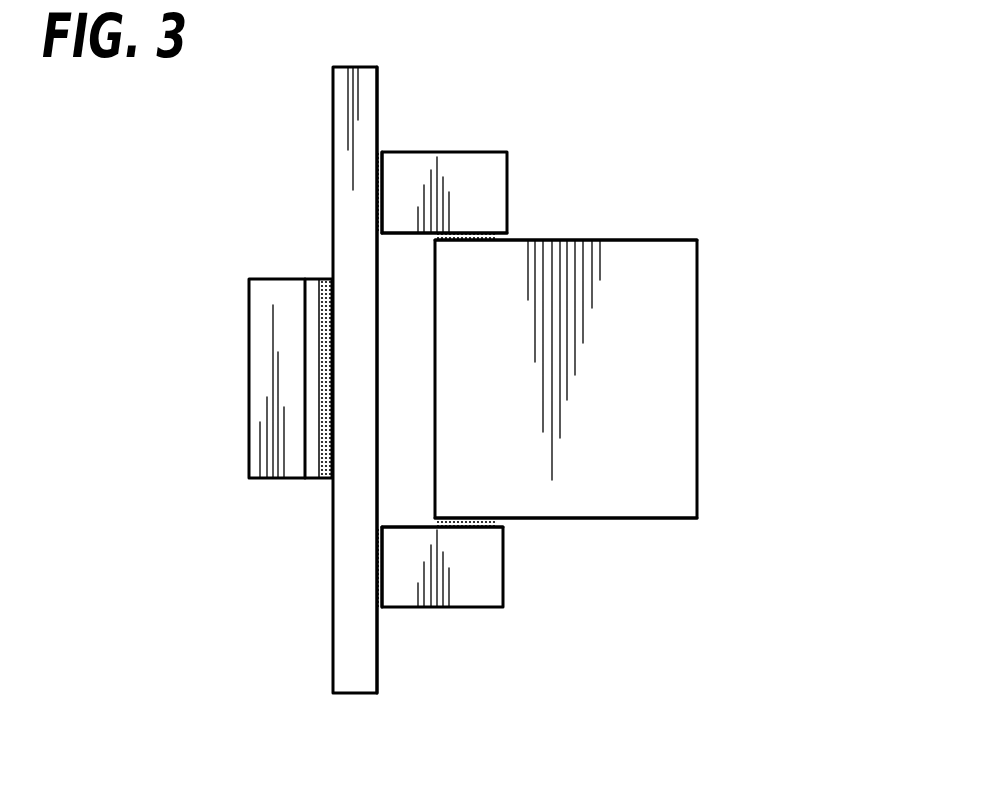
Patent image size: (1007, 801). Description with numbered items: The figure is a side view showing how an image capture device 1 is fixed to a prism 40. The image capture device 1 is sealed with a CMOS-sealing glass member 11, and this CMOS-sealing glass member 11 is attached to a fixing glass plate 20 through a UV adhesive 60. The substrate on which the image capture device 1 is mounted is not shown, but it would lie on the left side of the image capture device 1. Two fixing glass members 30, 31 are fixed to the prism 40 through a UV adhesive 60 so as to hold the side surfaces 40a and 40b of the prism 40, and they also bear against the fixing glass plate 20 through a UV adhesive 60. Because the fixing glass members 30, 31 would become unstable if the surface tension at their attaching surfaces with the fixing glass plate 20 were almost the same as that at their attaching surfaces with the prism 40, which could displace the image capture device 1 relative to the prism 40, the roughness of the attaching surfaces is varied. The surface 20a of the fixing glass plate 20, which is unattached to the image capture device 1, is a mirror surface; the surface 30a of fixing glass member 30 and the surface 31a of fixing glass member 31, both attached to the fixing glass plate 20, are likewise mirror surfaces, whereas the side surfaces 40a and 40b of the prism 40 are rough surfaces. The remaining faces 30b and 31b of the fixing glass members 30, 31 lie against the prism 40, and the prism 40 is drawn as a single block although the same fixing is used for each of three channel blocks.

The image capture device 1 is at (265, 387).
The CMOS-sealing glass member 11 is at (313, 290).
The fixing glass plate 20 is at (345, 603).
The surface of fixing glass plate 20a is at (378, 387).
The fixing glass member 30 is at (485, 185).
The surface of fixing glass member 30a is at (383, 170).
The bottom face of first block member 30b is at (405, 235).
The fixing glass member 31 is at (482, 590).
The surface of fixing glass member 31a is at (383, 586).
The top face of second block member 31b is at (407, 525).
The prism 40 is at (660, 358).
The side surface of prism 40a is at (655, 240).
The side surface of prism 40b is at (663, 518).
The UV adhesive 60 is at (460, 232).